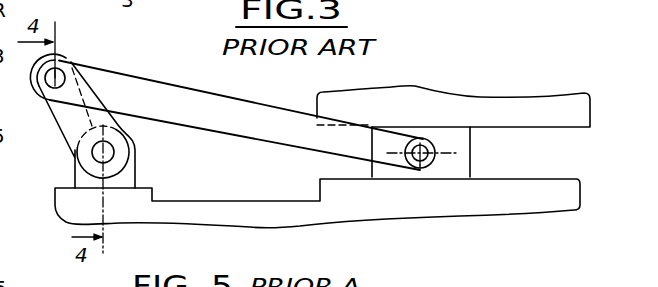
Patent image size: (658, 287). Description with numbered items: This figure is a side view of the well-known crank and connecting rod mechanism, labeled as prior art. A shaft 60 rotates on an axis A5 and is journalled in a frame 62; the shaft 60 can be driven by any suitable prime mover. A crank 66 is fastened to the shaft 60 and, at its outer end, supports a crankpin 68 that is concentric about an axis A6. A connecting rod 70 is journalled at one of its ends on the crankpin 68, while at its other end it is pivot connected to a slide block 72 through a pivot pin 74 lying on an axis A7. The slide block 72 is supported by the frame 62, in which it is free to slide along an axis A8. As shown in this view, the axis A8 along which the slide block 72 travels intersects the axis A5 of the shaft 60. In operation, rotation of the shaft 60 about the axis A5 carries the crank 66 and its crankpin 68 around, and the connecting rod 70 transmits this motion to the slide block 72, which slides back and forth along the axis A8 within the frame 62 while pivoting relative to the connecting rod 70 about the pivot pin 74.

The shaft 60 is at (105, 159).
The frame 62 is at (498, 94).
The crank 66 is at (63, 133).
The crankpin 68 is at (72, 62).
The connecting rod 70 is at (220, 96).
The slide block 72 is at (470, 160).
The pivot pin 74 is at (420, 153).
The axis of the shaft A5 is at (103, 152).
The axis of the crankpin A6 is at (55, 78).
The axis of the pivot pin A7 is at (420, 153).
The slide axis of the slide block A8 is at (405, 161).